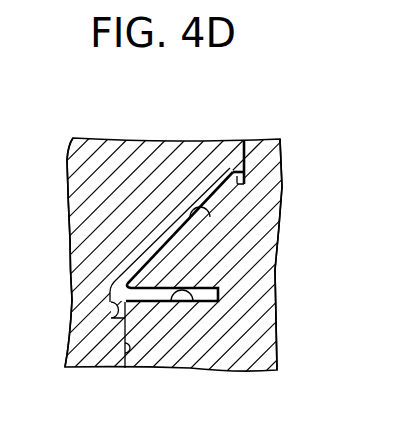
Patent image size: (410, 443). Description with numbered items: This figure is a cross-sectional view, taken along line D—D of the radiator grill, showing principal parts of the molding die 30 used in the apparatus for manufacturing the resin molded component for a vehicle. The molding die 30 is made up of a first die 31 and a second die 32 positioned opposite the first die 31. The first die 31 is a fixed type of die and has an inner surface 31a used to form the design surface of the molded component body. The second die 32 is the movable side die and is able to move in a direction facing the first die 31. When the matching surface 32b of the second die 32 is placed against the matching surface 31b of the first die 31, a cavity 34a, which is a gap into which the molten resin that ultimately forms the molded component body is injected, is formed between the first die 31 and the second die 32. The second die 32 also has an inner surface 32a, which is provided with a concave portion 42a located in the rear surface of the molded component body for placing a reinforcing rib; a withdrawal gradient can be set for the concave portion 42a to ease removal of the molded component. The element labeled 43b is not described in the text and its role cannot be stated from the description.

The molding die 30 is at (254, 124).
The first die 31 is at (84, 282).
The inner surface 31a is at (67, 342).
The matching surface 31b is at (247, 146).
The second die 32 is at (272, 278).
The inner surface 32a is at (212, 206).
The matching surface 32b is at (238, 163).
The cavity 34a is at (155, 250).
The concave portion 42a is at (178, 303).
The pocket 43b is at (244, 181).